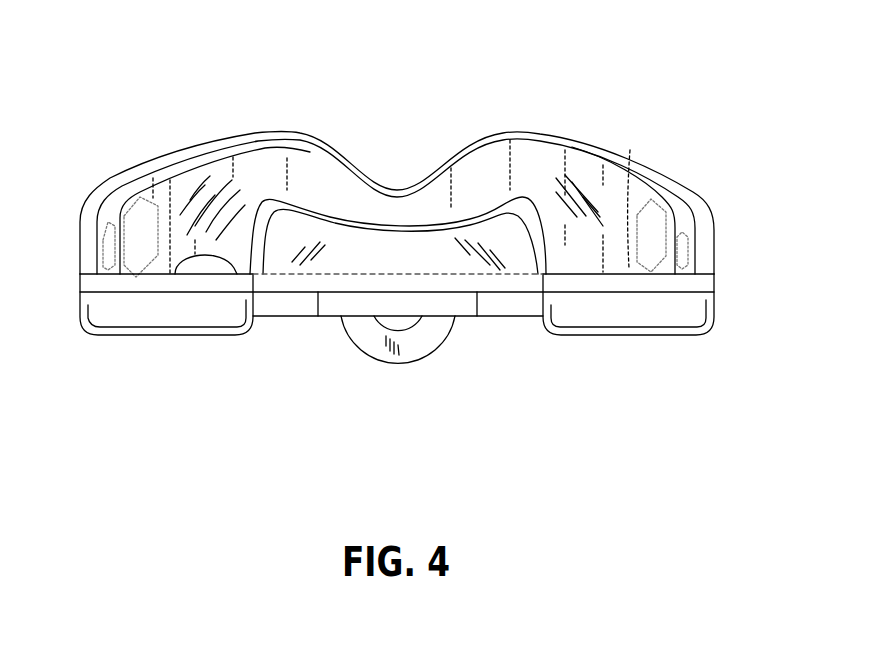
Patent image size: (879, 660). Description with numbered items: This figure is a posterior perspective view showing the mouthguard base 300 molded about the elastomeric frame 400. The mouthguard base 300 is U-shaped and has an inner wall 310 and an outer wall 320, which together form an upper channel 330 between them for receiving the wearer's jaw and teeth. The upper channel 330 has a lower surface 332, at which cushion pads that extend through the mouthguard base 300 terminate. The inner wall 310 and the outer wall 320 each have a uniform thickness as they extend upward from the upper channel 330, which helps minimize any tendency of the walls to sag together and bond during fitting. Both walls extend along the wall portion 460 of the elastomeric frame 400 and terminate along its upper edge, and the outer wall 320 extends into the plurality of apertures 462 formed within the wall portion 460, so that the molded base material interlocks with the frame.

The mouthguard base 300 is at (493, 110).
The inner wall 310 is at (268, 200).
The outer wall 320 is at (160, 195).
The upper channel 330 is at (598, 260).
The lower surface 332 is at (237, 274).
The elastomeric frame 400 is at (654, 338).
The wall portion 460 is at (585, 131).
The apertures 462 is at (638, 146).